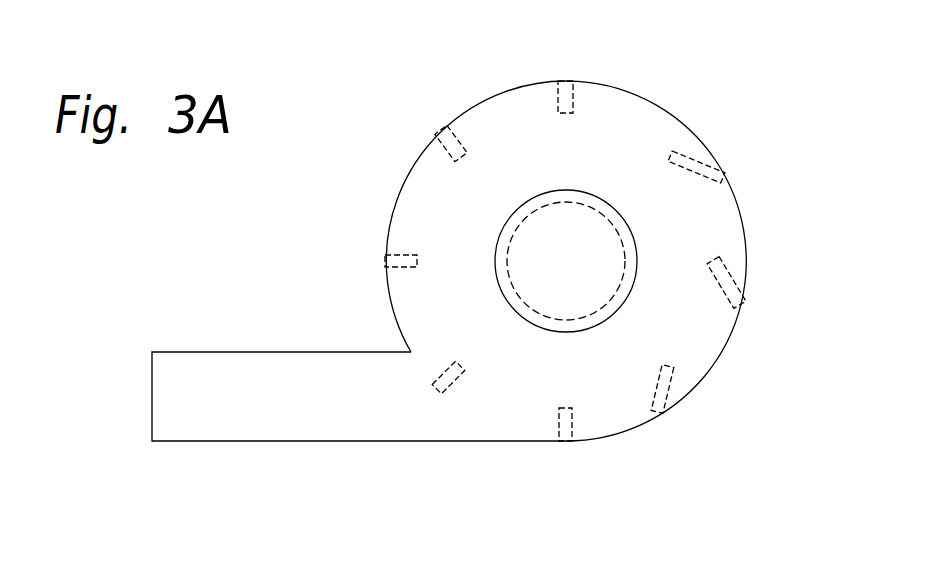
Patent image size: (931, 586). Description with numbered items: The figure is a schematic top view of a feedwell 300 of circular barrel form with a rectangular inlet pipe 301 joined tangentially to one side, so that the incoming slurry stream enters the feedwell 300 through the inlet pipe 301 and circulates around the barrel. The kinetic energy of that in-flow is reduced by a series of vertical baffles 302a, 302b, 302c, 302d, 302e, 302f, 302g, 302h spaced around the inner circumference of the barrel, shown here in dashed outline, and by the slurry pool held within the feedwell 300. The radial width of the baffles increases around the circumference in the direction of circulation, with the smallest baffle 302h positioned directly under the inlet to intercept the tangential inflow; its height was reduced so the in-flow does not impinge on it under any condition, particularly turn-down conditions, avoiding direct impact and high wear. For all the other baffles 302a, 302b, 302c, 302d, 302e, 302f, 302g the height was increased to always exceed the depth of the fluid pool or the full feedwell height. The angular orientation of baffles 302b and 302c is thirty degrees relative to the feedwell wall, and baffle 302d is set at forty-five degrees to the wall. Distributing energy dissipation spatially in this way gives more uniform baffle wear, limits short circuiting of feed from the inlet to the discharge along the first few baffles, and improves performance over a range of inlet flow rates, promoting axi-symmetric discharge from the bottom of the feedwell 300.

The feedwell 300 is at (735, 198).
The inlet pipe 301 is at (218, 351).
The vertical baffle 302a is at (567, 441).
The vertical baffle 302b is at (665, 405).
The vertical baffle 302c is at (742, 299).
The vertical baffle 302d is at (712, 163).
The vertical baffle 302e is at (564, 81).
The vertical baffle 302f is at (442, 135).
The vertical baffle 302g is at (385, 261).
The vertical baffle 302h is at (433, 390).